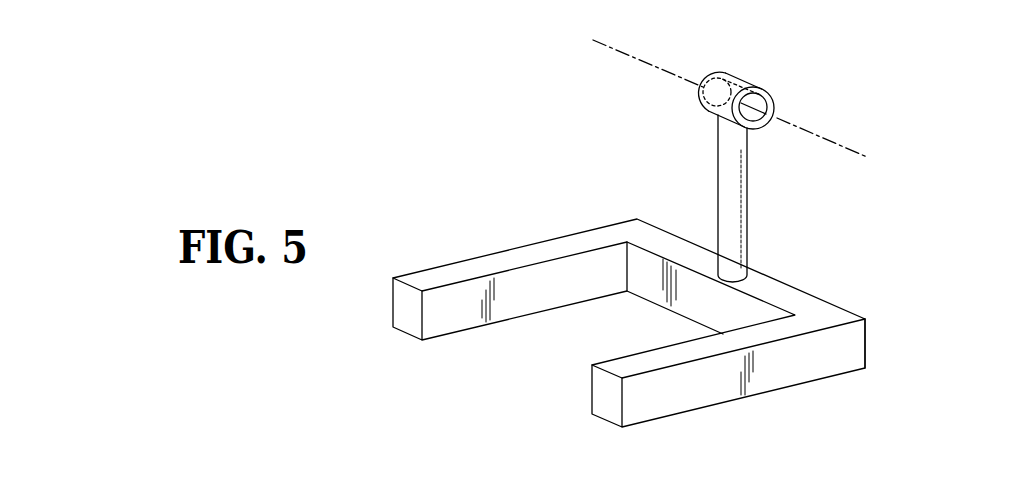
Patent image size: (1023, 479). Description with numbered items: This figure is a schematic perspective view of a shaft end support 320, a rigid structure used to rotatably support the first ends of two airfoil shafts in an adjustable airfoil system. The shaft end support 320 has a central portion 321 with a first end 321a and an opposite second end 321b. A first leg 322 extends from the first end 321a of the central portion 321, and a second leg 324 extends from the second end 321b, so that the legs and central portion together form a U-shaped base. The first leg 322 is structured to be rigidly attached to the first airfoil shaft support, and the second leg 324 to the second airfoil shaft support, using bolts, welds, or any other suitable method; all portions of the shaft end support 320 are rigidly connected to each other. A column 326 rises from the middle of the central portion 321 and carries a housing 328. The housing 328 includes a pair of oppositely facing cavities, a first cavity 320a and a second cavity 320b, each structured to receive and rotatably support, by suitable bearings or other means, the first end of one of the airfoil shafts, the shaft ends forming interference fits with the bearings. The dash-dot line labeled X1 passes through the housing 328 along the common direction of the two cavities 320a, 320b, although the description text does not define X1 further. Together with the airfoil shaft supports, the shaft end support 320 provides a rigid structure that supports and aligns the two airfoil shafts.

The shaft end support 320 is at (694, 231).
The first cavity 320a is at (774, 108).
The second cavity 320b is at (698, 80).
The central portion 321 is at (792, 298).
The first end of the central portion 321a is at (833, 315).
The second end of the central portion 321b is at (643, 237).
The first leg 322 is at (667, 395).
The second leg 324 is at (493, 263).
The column 326 is at (733, 173).
The housing 328 is at (743, 72).
The axis X1 is at (845, 148).